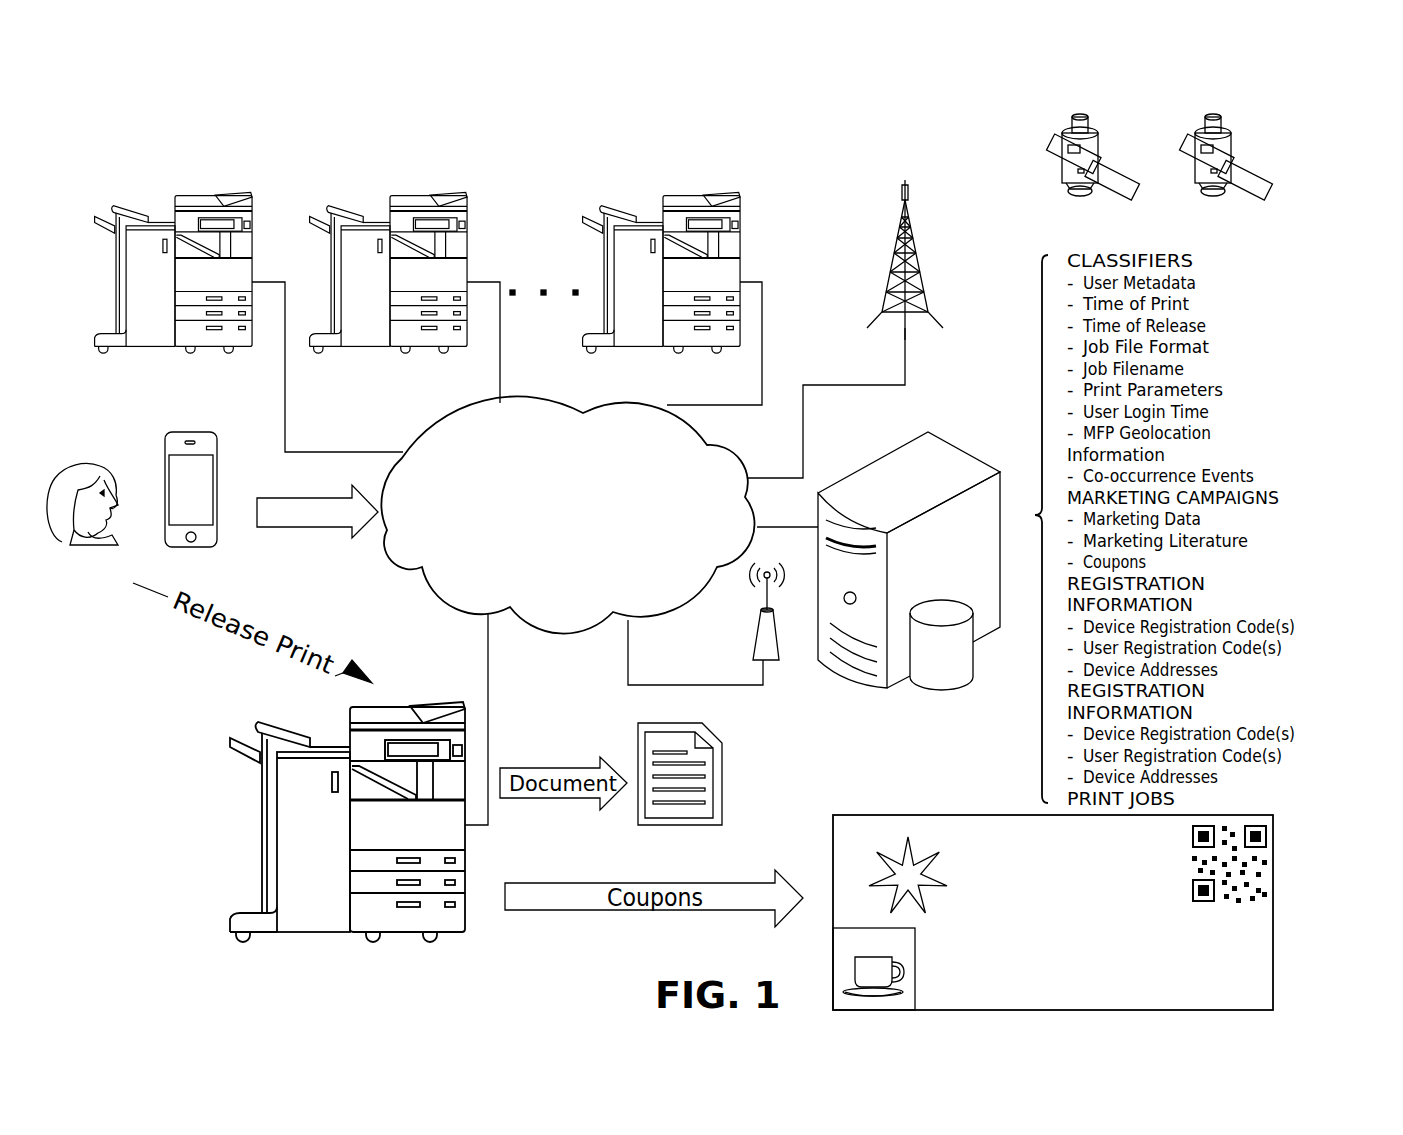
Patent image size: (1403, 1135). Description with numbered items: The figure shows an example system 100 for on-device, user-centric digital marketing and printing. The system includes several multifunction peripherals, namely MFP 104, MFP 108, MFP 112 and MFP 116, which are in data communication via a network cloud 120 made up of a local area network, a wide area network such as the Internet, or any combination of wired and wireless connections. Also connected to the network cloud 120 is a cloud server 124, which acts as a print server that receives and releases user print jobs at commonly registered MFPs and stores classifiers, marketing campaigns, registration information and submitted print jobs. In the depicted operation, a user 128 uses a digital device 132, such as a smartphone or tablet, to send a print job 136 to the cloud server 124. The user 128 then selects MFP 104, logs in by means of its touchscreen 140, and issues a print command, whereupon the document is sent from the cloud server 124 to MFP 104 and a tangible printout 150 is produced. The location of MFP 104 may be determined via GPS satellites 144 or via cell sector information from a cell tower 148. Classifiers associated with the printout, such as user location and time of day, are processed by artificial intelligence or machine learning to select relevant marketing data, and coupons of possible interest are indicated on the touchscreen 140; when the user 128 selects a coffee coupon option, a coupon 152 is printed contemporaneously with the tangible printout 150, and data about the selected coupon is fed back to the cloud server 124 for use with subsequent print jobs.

The system 100 is at (1303, 160).
The MFP 104 is at (450, 930).
The MFP 108 is at (252, 213).
The MFP 112 is at (467, 213).
The MFP 116 is at (740, 213).
The network cloud 120 is at (557, 637).
The cloud server 124 is at (975, 450).
The user 128 is at (99, 463).
The digital device 132 is at (193, 432).
The print job 136 is at (300, 528).
The touchscreen 140 is at (420, 705).
The GPS satellites 144 is at (1287, 195).
The cell tower 148 is at (912, 227).
The tangible printout 150 is at (722, 782).
The coupon 152 is at (1273, 947).